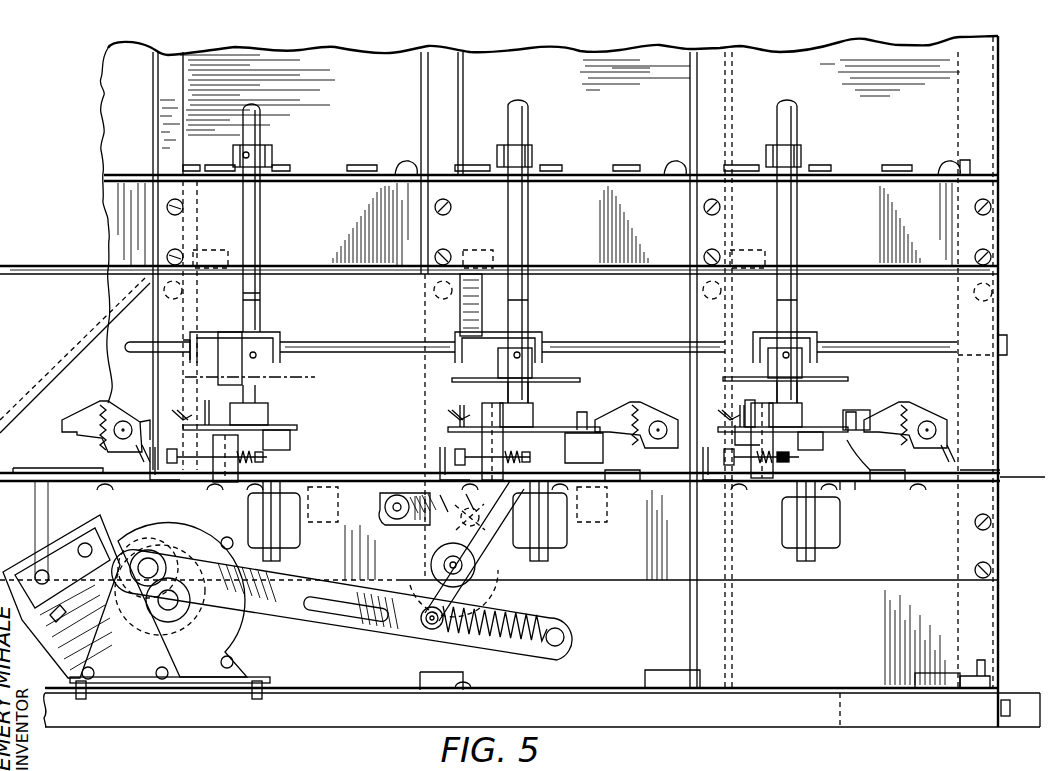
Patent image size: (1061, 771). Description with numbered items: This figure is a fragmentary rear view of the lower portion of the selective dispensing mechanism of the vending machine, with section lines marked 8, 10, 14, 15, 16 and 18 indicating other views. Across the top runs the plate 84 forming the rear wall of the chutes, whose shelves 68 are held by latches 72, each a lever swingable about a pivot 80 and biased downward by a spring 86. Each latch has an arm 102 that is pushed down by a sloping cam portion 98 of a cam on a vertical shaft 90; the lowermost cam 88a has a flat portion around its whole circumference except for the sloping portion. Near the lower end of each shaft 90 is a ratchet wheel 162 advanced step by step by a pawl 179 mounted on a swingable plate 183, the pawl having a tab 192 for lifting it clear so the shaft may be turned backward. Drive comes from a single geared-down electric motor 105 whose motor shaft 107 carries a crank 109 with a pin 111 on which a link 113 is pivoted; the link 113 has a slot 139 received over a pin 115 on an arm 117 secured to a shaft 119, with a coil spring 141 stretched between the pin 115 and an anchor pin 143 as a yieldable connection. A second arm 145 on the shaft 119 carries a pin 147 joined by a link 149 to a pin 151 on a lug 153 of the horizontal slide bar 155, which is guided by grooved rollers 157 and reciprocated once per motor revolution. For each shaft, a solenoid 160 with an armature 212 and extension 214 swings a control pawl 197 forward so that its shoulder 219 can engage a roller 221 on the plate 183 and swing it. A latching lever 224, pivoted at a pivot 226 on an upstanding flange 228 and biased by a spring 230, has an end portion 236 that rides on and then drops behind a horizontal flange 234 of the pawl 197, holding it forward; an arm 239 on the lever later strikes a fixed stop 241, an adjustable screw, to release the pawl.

The plate 84 is at (336, 58).
The shelves 68 is at (48, 285).
The vertical shaft 90 is at (262, 216).
The latch 72 is at (258, 295).
The pivot 80 is at (370, 342).
The arm or tab 102 is at (218, 380).
The sloping cam portion 98 is at (500, 336).
The lowermost cam 88a is at (585, 363).
The spring 86 is at (188, 378).
The pawl 179 is at (180, 412).
The ratchet wheel 162 is at (275, 420).
The fixed stop 241 is at (162, 485).
The latching lever 224 is at (90, 410).
The spring 230 is at (100, 430).
The pivot 226 is at (123, 428).
The upstanding flange 228 is at (143, 420).
The end portion 236 is at (62, 425).
The arm 239 is at (146, 458).
The swingable plate or carriage 183 is at (736, 430).
The tab or flange 192 is at (762, 405).
The roller 221 is at (828, 445).
The slide bar 155 is at (148, 487).
The grooved rollers 157 is at (115, 486).
The solenoid 160 is at (295, 552).
The armature 212 is at (282, 530).
The extension 214 is at (300, 512).
The horizontal flange 234 is at (600, 485).
The flange or shoulder 219 is at (860, 490).
The pawl or control arm 197 is at (845, 500).
The electric motor 105 is at (150, 535).
The link 113 is at (262, 610).
The crank 109 is at (162, 592).
The pin 111 is at (158, 556).
The motor shaft 107 is at (172, 572).
The slot 139 is at (320, 600).
The coil spring 141 is at (510, 627).
The anchor pin 143 is at (564, 637).
The pin 115 is at (420, 618).
The arm 117 is at (464, 568).
The shaft 119 is at (444, 566).
The second arm 145 is at (505, 580).
The pin 147 is at (470, 524).
The link 149 is at (445, 522).
The lug or flange 153 is at (340, 505).
The pin 151 is at (342, 520).
The section line 8 is at (42, 393).
The section line 10 is at (664, 150).
The section line 14 is at (474, 490).
The section line 15 is at (388, 391).
The section line 16 is at (936, 391).
The section line 18 is at (2, 500).